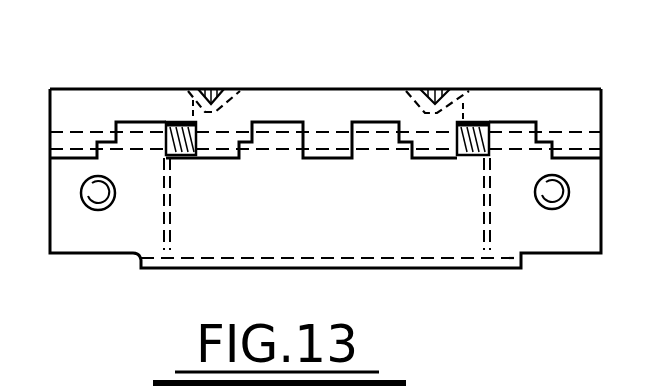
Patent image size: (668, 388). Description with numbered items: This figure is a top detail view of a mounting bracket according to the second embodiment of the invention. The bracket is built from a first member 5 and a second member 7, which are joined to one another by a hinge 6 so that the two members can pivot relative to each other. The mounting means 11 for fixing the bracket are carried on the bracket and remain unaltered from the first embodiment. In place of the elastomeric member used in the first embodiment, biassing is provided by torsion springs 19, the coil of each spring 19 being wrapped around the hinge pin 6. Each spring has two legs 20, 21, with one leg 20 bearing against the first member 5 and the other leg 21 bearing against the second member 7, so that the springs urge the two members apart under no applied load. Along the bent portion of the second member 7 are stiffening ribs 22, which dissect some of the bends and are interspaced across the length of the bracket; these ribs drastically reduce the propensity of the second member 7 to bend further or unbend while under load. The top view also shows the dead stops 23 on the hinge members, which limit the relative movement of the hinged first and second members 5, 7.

The first member 5 is at (270, 205).
The hinge 6 is at (579, 137).
The second member 7 is at (320, 103).
The mounting means 11 is at (99, 194).
The torsion spring 19 is at (476, 127).
The spring leg 20 is at (486, 230).
The spring leg 21 is at (192, 107).
The stiffening rib 22 is at (436, 92).
The dead stop 23 is at (248, 132).